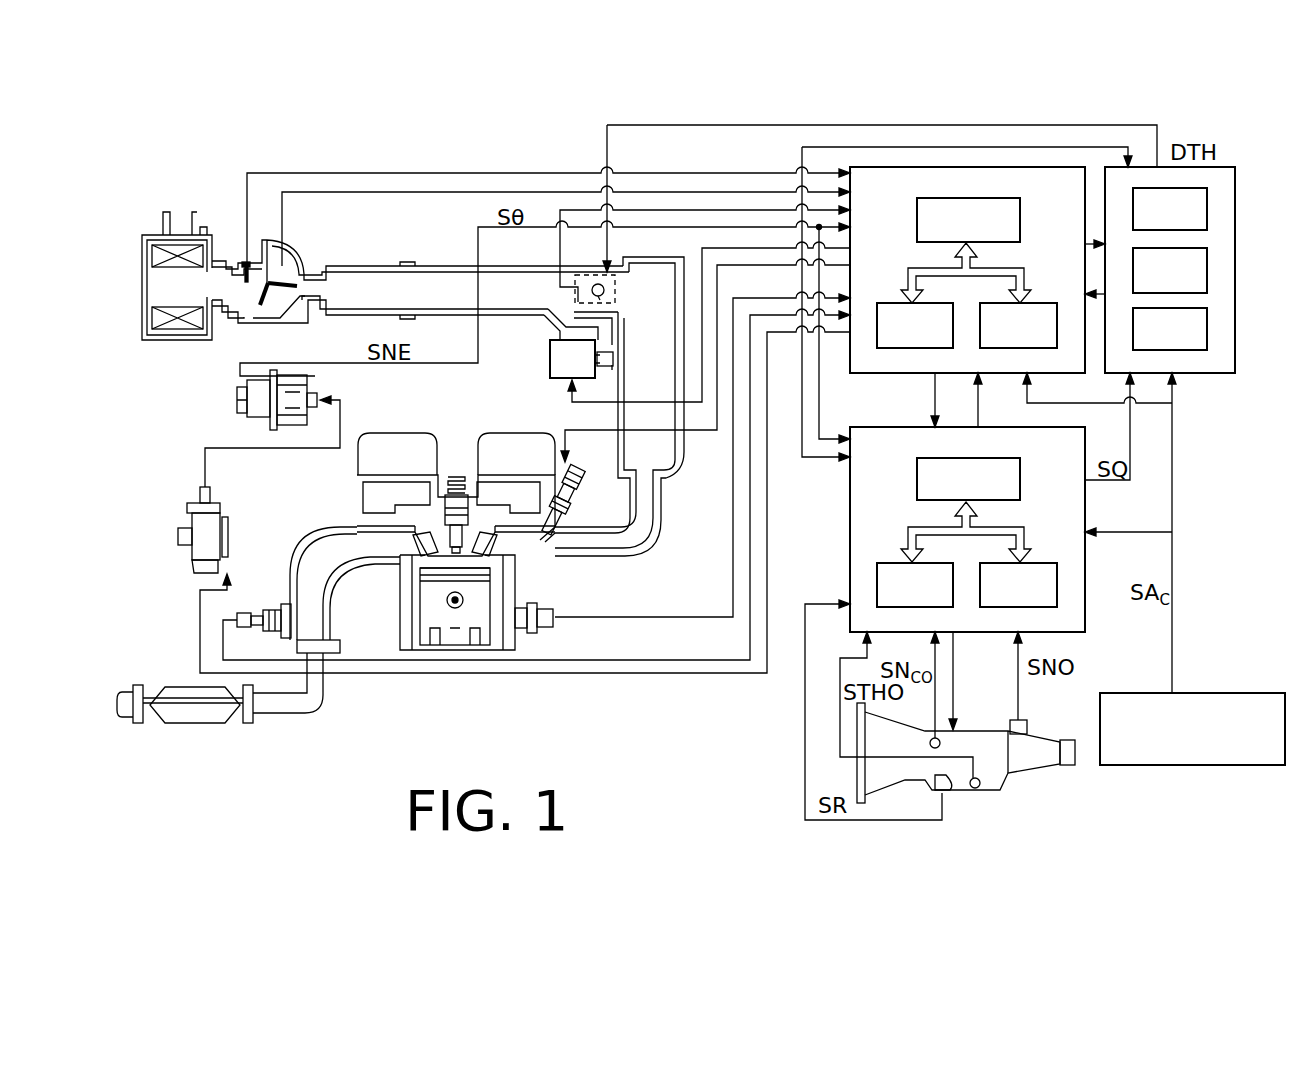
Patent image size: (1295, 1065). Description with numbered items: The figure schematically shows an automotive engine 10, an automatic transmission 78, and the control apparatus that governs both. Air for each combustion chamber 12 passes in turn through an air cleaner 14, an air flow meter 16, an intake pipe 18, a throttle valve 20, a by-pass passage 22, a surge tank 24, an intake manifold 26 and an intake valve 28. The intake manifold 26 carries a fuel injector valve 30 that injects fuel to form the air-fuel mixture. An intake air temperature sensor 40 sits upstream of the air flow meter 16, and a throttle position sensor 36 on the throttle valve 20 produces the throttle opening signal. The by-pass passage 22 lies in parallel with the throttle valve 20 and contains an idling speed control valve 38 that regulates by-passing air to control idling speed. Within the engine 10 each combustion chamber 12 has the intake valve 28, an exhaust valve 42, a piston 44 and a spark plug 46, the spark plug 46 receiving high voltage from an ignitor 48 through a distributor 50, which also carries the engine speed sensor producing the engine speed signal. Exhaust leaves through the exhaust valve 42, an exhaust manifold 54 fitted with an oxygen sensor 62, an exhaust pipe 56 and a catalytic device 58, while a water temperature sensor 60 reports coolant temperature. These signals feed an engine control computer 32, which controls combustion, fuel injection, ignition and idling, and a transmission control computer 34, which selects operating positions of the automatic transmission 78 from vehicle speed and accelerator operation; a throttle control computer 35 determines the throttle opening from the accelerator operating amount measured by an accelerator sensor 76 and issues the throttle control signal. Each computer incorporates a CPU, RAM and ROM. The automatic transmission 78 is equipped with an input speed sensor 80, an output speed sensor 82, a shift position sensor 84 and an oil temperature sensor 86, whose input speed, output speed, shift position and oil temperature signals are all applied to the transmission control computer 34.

The engine 10 is at (340, 477).
The combustion chamber 12 is at (470, 567).
The air cleaner 14 is at (157, 222).
The air flow meter 16 is at (298, 258).
The intake pipe 18 is at (420, 263).
The throttle valve 20 is at (585, 282).
The by-pass passage 22 is at (560, 312).
The surge tank 24 is at (686, 463).
The intake manifold 26 is at (658, 542).
The intake valve 28 is at (575, 552).
The fuel injector valve 30 is at (533, 470).
The engine control computer 32 is at (903, 375).
The transmission control computer 34 is at (851, 507).
The throttle control computer 35 is at (1207, 375).
The throttle position sensor 36 is at (617, 287).
The idling speed control valve 38 is at (565, 357).
The intake air temperature sensor 40 is at (241, 260).
The exhaust valve 42 is at (426, 574).
The piston 44 is at (436, 600).
The spark plug 46 is at (455, 458).
The ignitor 48 is at (190, 515).
The distributor 50 is at (235, 400).
The exhaust manifold 54 is at (306, 541).
The exhaust pipe 56 is at (312, 692).
The catalytic device 58 is at (180, 688).
The water temperature sensor 60 is at (556, 624).
The oxygen sensor 62 is at (263, 612).
The accelerator sensor 76 is at (1213, 692).
The automatic transmission 78 is at (1036, 790).
The input speed sensor 80 is at (946, 742).
The output speed sensor 82 is at (1030, 728).
The shift position sensor 84 is at (950, 792).
The oil temperature sensor 86 is at (978, 789).